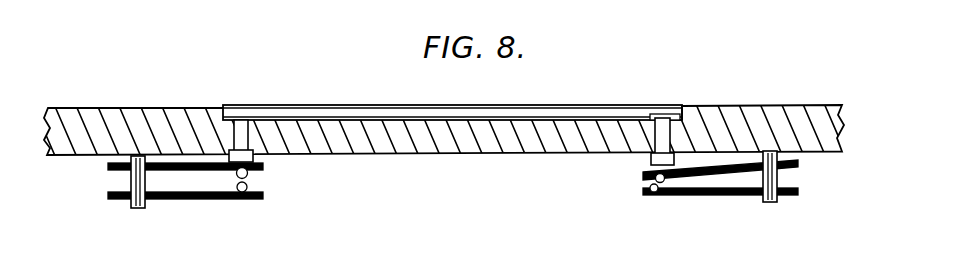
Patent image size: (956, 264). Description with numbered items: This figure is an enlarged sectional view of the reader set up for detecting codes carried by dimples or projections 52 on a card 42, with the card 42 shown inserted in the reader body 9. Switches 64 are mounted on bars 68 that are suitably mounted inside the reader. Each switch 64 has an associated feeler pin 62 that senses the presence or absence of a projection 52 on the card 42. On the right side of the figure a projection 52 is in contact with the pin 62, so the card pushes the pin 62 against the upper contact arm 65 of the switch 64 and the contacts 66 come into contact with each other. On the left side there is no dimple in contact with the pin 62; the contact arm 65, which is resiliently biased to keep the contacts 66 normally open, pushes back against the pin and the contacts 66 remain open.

The wall slab 9 is at (453, 165).
The card 42 is at (600, 110).
The projection 52 is at (666, 116).
The feeler pin 62 is at (234, 143).
The switch 64 is at (178, 202).
The upper contact arm 65 is at (172, 161).
The contacts 66 is at (245, 188).
The bar 68 is at (134, 208).